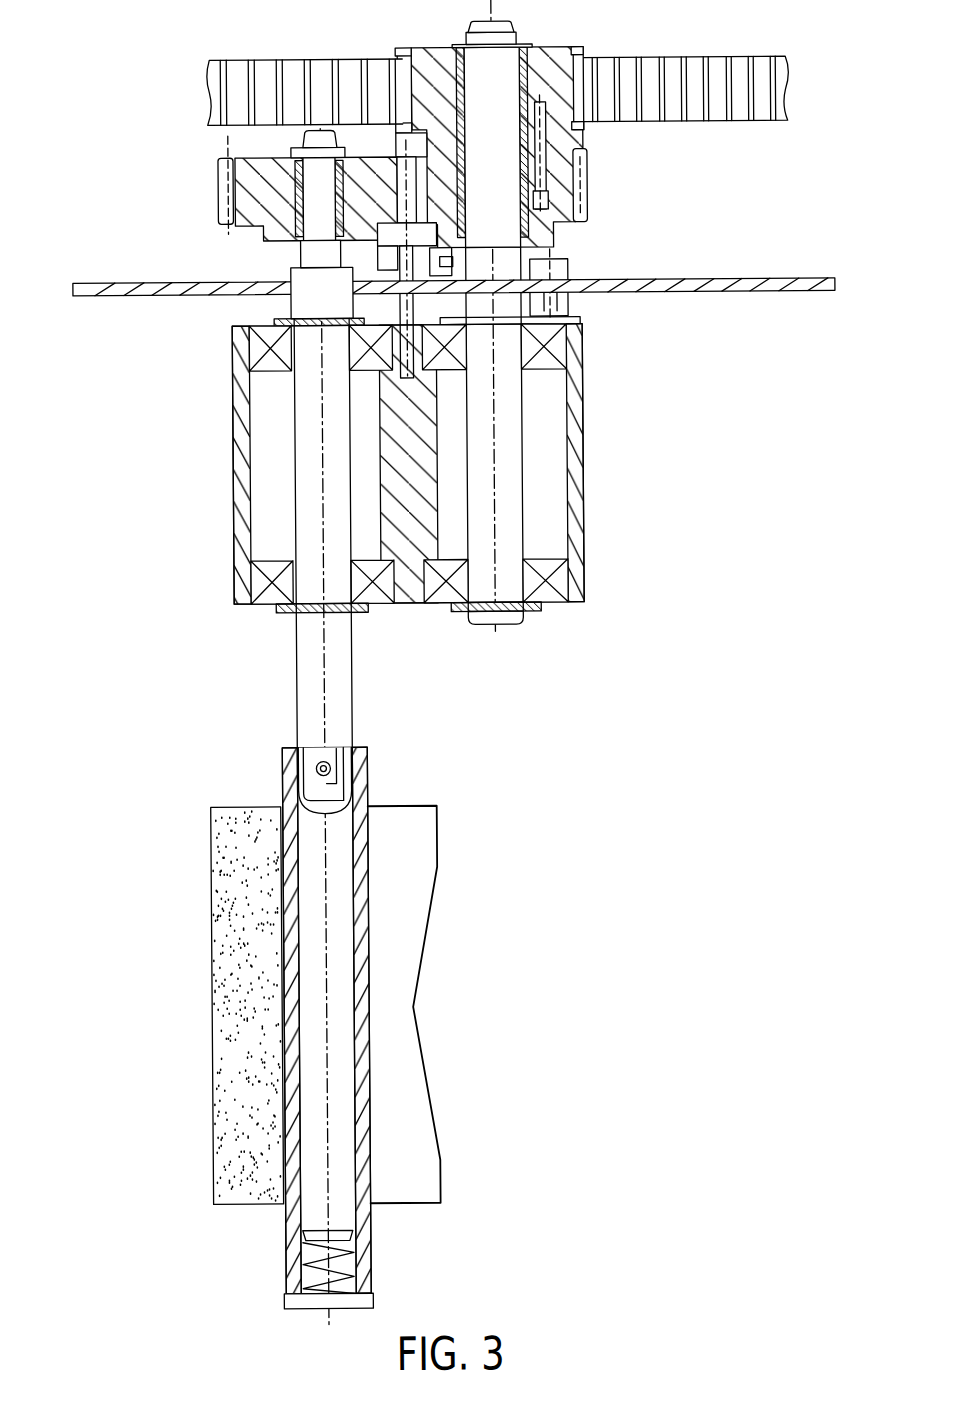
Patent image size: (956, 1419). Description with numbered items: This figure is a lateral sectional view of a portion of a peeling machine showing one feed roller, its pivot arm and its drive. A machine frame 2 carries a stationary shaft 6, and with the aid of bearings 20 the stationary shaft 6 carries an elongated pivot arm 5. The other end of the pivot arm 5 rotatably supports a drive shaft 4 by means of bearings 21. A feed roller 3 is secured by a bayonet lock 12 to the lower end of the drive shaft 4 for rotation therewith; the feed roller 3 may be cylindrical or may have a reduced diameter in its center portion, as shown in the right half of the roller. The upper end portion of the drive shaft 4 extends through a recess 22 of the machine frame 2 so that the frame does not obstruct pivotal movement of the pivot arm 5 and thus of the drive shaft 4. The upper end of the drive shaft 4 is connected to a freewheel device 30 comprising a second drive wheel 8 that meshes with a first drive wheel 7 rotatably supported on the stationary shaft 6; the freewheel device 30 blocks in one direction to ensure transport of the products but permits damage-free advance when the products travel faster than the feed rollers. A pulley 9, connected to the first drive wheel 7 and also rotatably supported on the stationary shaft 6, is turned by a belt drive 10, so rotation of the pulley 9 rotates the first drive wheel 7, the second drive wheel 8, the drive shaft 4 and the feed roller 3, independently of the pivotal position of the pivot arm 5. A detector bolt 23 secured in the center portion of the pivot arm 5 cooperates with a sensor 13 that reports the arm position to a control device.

The machine frame 2 is at (745, 284).
The feed roller 3 is at (414, 840).
The drive shaft 4 is at (349, 680).
The pivot arm 5 is at (391, 478).
The stationary shaft 6 is at (510, 487).
The first drive wheel 7 is at (568, 190).
The second drive wheel 8 is at (250, 200).
The pulley 9 is at (548, 62).
The belt drive 10 is at (719, 67).
The bayonet lock 12 is at (339, 770).
The sensor 13 is at (378, 225).
The bearings 20 is at (551, 605).
The bearings 21 is at (266, 605).
The recess 22 is at (284, 285).
The detector bolt 23 is at (405, 295).
The freewheel device 30 is at (248, 157).